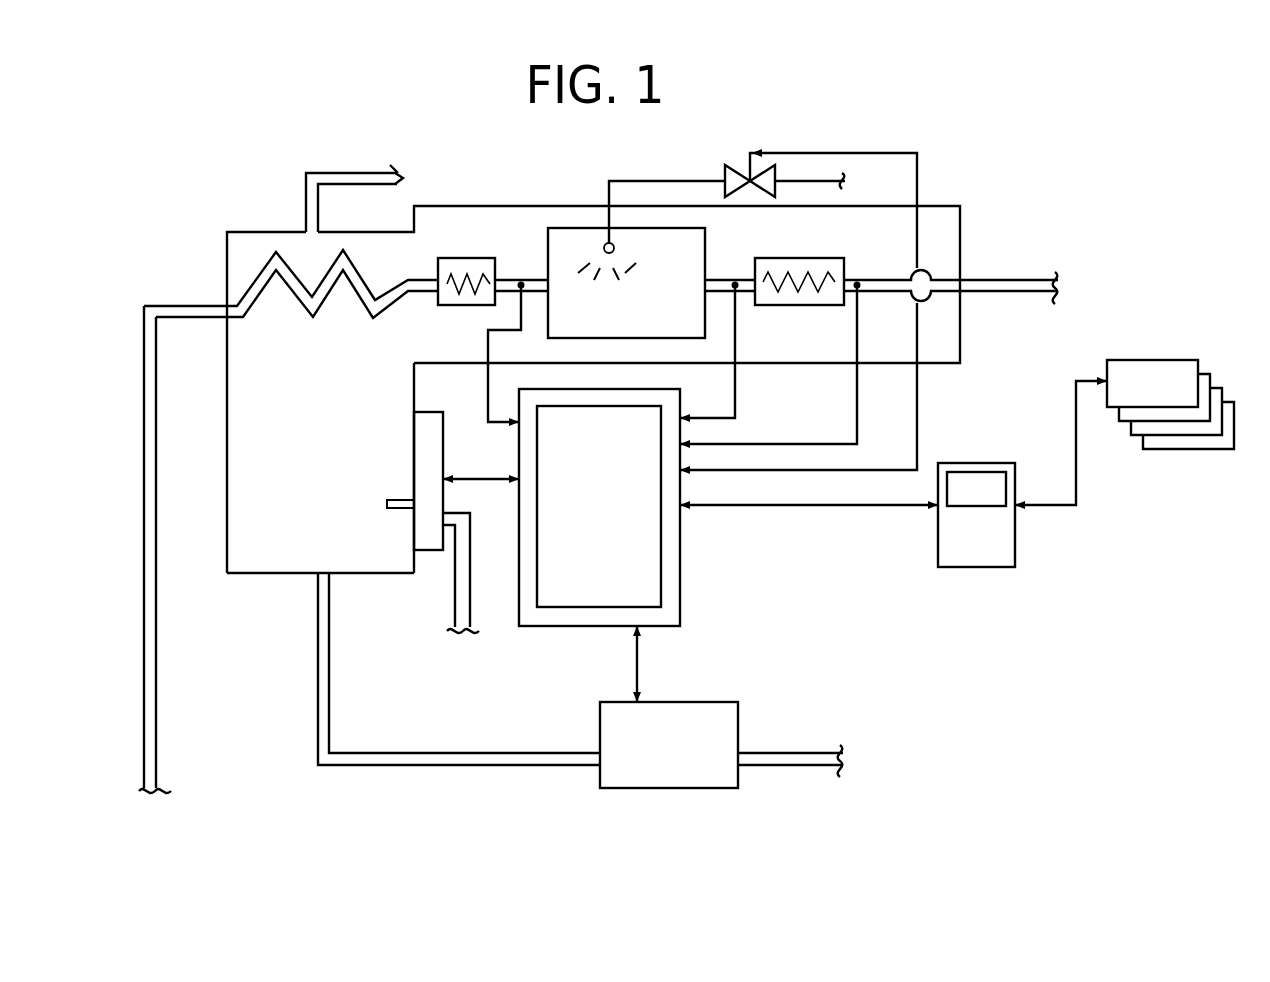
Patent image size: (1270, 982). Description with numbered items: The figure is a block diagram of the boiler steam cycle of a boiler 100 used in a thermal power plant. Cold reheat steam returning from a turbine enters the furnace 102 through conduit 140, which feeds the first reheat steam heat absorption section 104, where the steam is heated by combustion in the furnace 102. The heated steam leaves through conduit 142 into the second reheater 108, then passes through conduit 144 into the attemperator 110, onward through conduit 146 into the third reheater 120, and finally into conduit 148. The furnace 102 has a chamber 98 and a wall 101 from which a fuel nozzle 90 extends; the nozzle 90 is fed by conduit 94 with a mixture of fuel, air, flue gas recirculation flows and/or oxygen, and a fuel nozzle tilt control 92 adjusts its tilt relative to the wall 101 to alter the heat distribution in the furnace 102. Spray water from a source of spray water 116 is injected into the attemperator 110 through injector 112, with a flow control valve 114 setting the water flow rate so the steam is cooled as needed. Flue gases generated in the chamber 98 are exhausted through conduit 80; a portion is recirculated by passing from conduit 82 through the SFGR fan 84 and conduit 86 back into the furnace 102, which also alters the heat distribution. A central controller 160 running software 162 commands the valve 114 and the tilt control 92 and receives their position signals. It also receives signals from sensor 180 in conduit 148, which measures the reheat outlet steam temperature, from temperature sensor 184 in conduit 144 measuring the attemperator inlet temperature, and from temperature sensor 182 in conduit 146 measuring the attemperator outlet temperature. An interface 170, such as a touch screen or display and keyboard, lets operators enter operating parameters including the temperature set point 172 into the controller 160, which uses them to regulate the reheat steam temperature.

The conduit 80 is at (352, 184).
The conduit 82 is at (780, 752).
The SFGR fan 84 is at (642, 775).
The conduit 86 is at (505, 750).
The fuel nozzle 90 is at (397, 498).
The fuel nozzle tilt control 92 is at (432, 452).
The conduit 94 is at (465, 587).
The chamber 98 is at (240, 430).
The boiler 100 is at (800, 598).
The wall 101 is at (414, 407).
The furnace 102 is at (223, 553).
The first reheat steam heat absorption section 104 is at (267, 268).
The second reheater 108 is at (462, 260).
The attemperator 110 is at (580, 237).
The spray water injector 112 is at (615, 247).
The flow control valve 114 is at (748, 178).
The source of spray water 116 is at (797, 180).
The third reheater 120 is at (807, 267).
The conduit 140 is at (143, 467).
The conduit 142 is at (423, 282).
The conduit 144 is at (510, 305).
The conduit 146 is at (715, 280).
The conduit 148 is at (1002, 282).
The central controller 160 is at (668, 575).
The software 162 is at (647, 403).
The interface 170 is at (1002, 550).
The R_SP setpoint 172 is at (1178, 357).
The sensor 180 is at (857, 280).
The temperature sensor 182 is at (736, 282).
The temperature sensor 184 is at (523, 278).